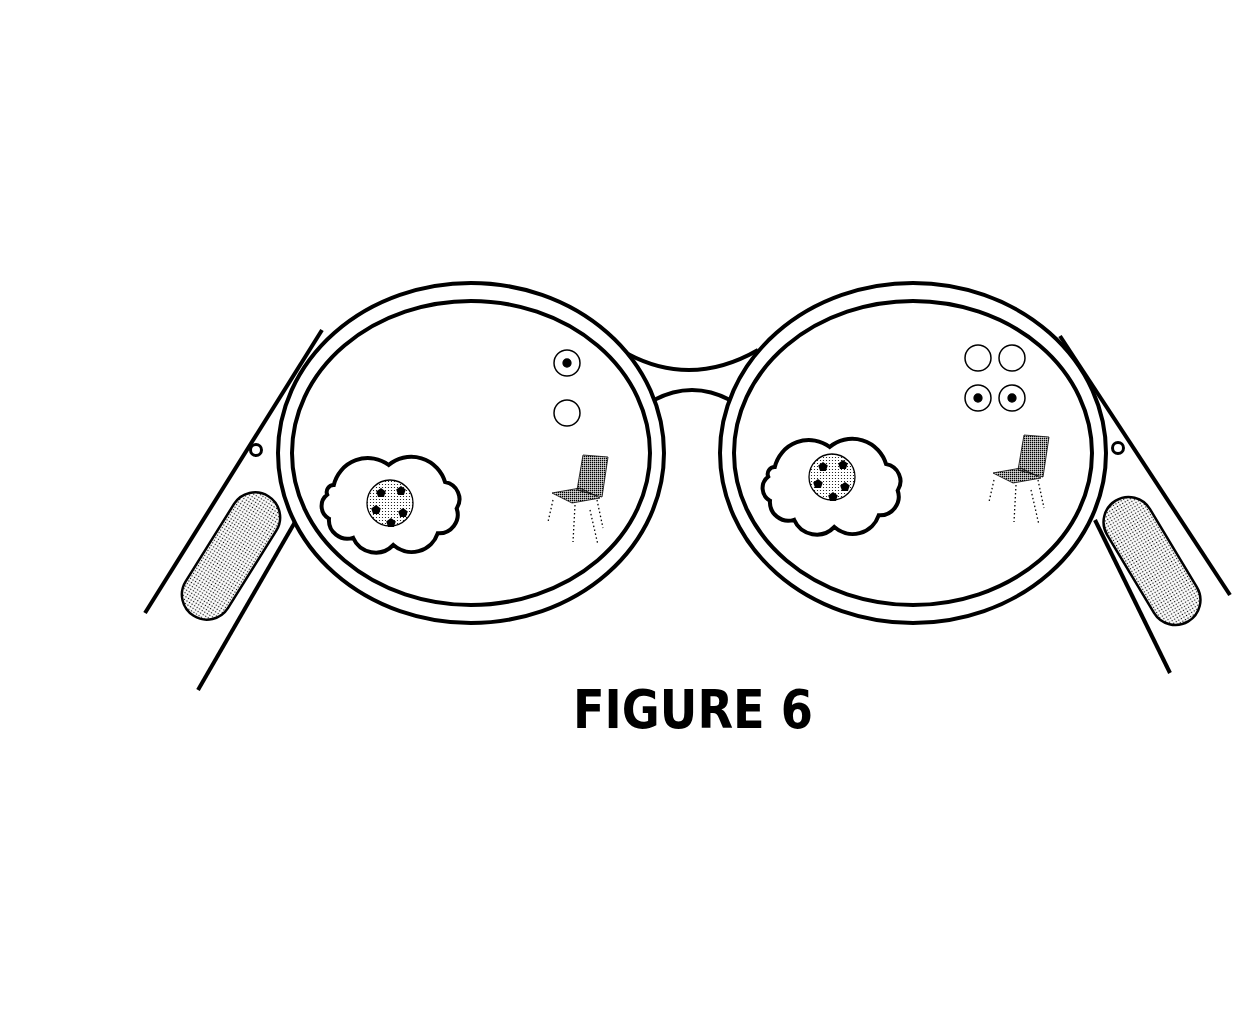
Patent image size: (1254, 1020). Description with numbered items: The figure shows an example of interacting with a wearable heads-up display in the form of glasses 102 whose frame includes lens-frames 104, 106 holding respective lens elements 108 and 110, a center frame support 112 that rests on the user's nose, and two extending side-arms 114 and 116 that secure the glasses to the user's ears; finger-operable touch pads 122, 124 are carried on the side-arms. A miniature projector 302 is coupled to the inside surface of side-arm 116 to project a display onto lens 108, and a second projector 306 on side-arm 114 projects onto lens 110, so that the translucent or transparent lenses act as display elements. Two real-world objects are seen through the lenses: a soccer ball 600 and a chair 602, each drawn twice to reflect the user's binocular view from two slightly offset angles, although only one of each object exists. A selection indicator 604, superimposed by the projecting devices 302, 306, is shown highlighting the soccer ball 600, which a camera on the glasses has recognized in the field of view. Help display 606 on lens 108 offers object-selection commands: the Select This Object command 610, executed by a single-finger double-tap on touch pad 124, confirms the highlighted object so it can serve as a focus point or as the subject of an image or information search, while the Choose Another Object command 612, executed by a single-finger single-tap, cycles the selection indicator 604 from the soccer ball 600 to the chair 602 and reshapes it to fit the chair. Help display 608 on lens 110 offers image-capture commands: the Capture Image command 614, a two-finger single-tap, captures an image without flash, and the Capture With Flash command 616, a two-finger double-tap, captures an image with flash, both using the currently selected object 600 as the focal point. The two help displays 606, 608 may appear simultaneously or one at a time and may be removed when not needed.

The glasses 102 is at (150, 338).
The lens-frame 104 is at (998, 608).
The lens-frame 106 is at (585, 588).
The lens element 108 is at (455, 583).
The lens element 110 is at (918, 583).
The center frame support 112 is at (672, 370).
The side-arm 114 is at (1138, 473).
The side-arm 116 is at (225, 478).
The finger-operable touch pad 122 is at (190, 557).
The finger-operable touch pad 124 is at (1170, 532).
The miniature projector 302 is at (257, 440).
The second projector 306 is at (1118, 442).
The real-world object 600 is at (392, 526).
The real-world object 602 is at (593, 530).
The selection indicator 604 is at (347, 546).
The help display 606 is at (465, 345).
The help display 608 is at (896, 340).
The Select This Object command 610 is at (345, 362).
The Choose Another Object command 612 is at (360, 405).
The Capture Image command 614 is at (1033, 356).
The Capture With Flash command 616 is at (1037, 397).